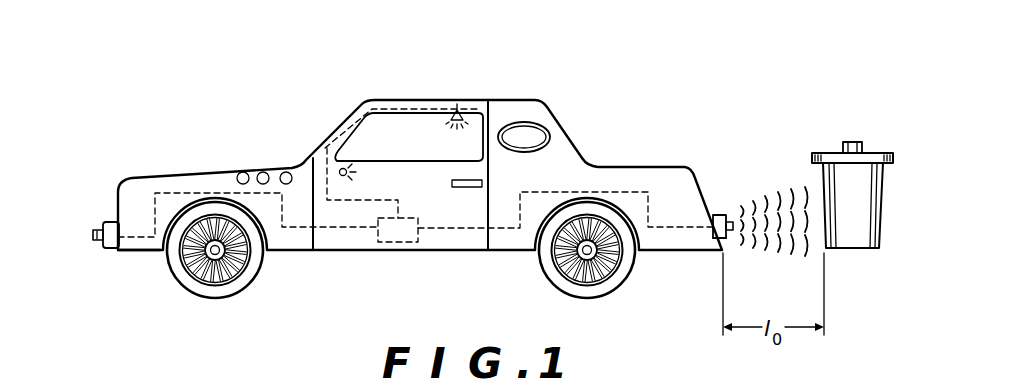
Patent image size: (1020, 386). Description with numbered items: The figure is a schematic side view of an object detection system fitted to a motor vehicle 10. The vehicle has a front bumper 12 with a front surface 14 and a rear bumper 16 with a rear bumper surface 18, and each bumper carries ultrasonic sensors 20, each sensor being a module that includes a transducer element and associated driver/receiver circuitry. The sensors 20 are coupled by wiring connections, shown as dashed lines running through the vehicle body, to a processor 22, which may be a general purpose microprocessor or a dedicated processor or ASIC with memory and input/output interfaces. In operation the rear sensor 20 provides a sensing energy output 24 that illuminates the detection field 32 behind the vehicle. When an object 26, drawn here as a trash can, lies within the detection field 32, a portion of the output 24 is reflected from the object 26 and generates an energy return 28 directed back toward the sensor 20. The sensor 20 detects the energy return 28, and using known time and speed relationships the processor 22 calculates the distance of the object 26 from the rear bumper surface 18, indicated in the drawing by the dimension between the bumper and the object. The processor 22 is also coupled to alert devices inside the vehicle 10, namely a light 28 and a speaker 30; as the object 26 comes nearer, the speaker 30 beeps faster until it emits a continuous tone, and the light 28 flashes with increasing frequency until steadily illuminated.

The motor vehicle 10 is at (577, 123).
The front bumper 12 is at (107, 250).
The front surface 14 is at (105, 223).
The rear bumper 16 is at (728, 240).
The rear bumper surface 18 is at (714, 215).
The ultrasonic sensors 20 is at (93, 234).
The processor 22 is at (409, 221).
The sensing energy output 24 is at (787, 188).
The object 26 is at (862, 232).
The energy return 28 is at (345, 168).
The speaker 30 is at (455, 121).
The detection field 32 is at (880, 142).